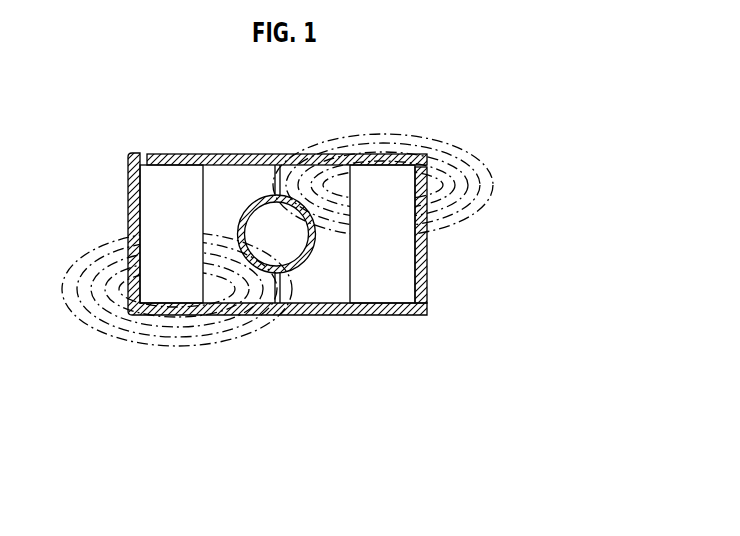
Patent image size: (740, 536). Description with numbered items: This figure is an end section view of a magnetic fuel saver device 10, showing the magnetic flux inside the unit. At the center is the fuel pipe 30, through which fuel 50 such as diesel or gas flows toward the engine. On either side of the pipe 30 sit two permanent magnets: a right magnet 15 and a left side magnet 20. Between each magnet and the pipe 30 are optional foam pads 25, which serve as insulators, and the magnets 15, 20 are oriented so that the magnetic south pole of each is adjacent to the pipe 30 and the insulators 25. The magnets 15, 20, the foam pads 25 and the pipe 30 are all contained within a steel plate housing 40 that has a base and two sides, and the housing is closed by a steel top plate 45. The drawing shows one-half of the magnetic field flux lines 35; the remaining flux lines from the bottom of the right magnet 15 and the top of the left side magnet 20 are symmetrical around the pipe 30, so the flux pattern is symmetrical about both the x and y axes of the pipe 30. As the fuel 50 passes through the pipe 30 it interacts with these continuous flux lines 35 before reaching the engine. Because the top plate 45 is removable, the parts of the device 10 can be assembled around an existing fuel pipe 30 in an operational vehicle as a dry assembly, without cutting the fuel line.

The fuel saver device 10 is at (496, 112).
The right magnet 15 is at (390, 215).
The left side magnet 20 is at (167, 192).
The foam pads 25 is at (232, 200).
The pipe 30 is at (262, 196).
The magnetic field flux lines 35 is at (348, 135).
The steel plate housing 40 is at (428, 280).
The steel top plate 45 is at (170, 158).
The fuel 50 is at (281, 273).